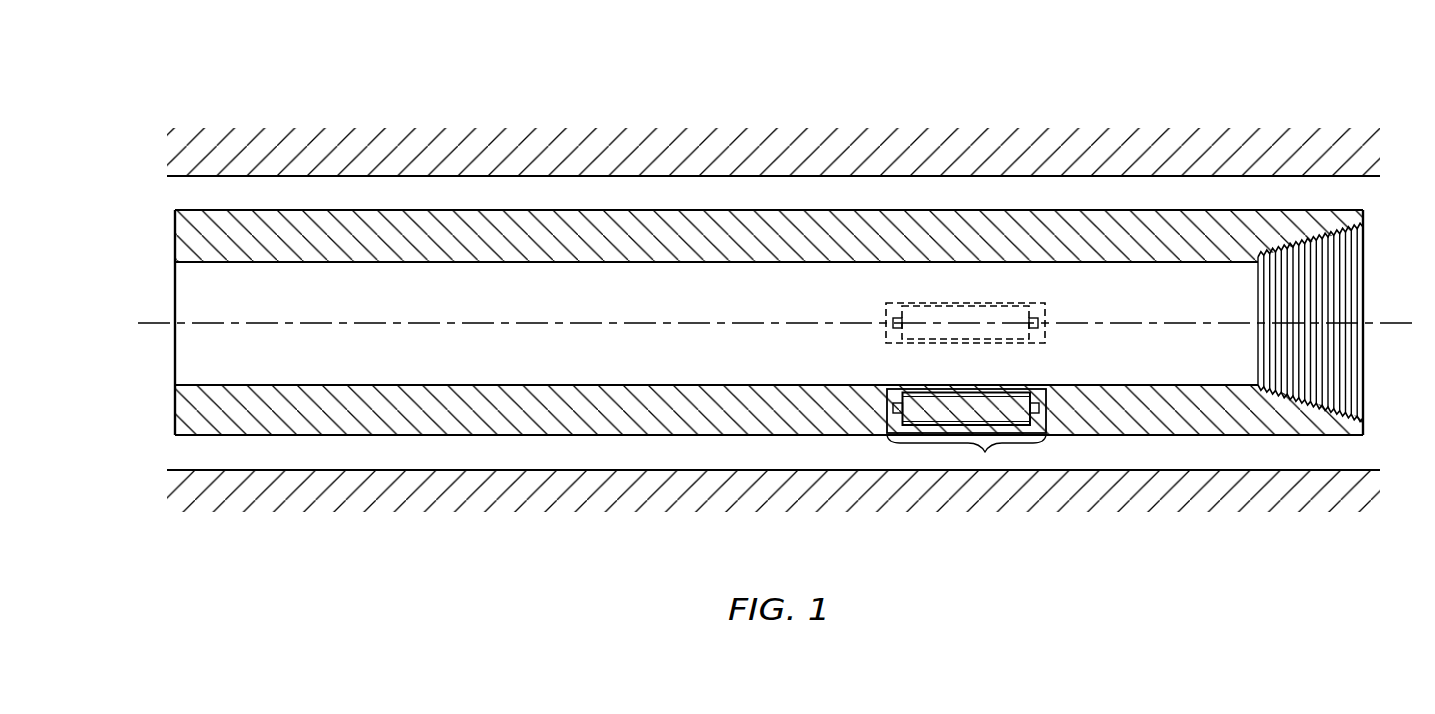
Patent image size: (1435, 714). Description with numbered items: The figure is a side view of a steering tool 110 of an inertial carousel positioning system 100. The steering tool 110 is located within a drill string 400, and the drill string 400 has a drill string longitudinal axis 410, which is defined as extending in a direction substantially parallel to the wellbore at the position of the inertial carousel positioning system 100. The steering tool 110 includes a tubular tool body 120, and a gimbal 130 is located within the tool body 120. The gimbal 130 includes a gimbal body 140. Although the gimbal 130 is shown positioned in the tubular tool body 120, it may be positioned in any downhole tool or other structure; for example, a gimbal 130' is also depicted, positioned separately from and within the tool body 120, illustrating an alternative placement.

The inertial carousel positioning system 100 is at (769, 240).
The steering tool 110 is at (887, 210).
The tool body 120 is at (411, 210).
The gimbal 130 is at (966, 488).
The gimbal 130' is at (984, 194).
The gimbal body 140 is at (1039, 408).
The drill string 400 is at (1086, 190).
The drill string longitudinal axis 410 is at (507, 323).